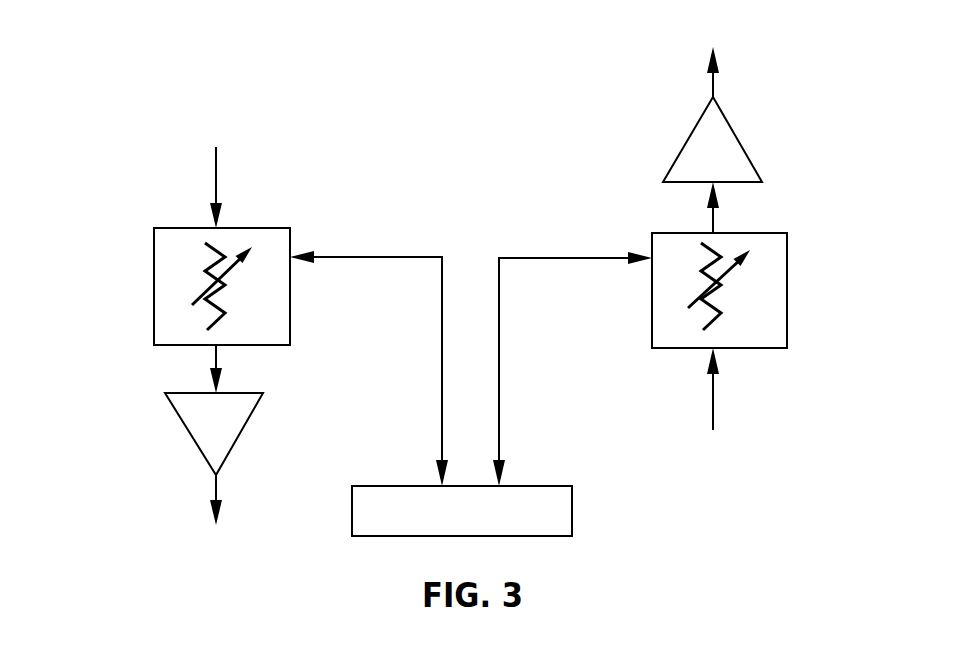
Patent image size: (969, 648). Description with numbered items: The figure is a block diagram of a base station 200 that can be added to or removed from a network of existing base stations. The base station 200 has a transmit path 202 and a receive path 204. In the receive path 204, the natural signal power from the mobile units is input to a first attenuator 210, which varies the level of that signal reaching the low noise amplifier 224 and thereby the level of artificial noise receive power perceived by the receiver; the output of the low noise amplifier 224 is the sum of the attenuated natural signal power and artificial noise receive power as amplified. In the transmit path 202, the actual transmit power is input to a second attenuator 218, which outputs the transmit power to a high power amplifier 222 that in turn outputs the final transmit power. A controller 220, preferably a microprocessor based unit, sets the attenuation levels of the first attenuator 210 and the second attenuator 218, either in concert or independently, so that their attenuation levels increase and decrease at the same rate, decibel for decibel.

The base station 200 is at (152, 189).
The transmit path 202 is at (110, 299).
The receive path 204 is at (832, 303).
The first attenuator 210 is at (652, 325).
The second attenuator 218 is at (290, 318).
The controller 220 is at (415, 486).
The high power amplifier 222 is at (235, 447).
The LNA 224 is at (732, 127).